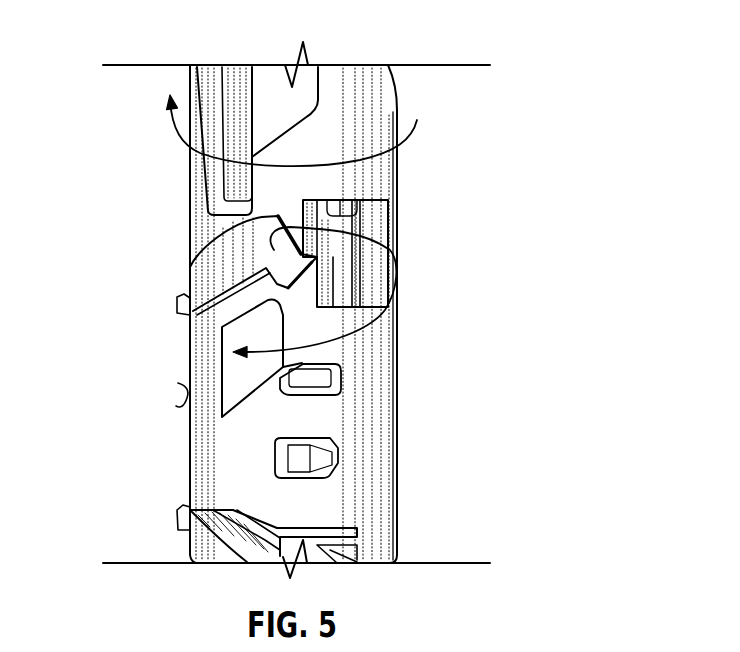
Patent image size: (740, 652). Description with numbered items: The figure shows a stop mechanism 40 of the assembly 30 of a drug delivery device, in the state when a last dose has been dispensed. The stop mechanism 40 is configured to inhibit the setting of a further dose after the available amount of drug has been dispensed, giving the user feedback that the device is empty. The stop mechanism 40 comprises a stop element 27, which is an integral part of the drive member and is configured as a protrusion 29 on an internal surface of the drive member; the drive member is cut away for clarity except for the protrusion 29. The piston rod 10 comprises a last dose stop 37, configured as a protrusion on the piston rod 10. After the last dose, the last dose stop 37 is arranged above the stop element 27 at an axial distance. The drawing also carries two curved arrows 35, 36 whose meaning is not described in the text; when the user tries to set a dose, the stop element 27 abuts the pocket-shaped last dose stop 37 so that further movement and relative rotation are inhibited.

The piston rod 10 is at (375, 362).
The stop element 27 is at (233, 340).
The protrusion 29 is at (237, 365).
The assembly 30 is at (512, 132).
The rotation direction arrow 35 is at (180, 141).
The movement direction arrow 36 is at (372, 350).
The last dose stop 37 is at (372, 234).
The stop mechanism 40 is at (176, 372).